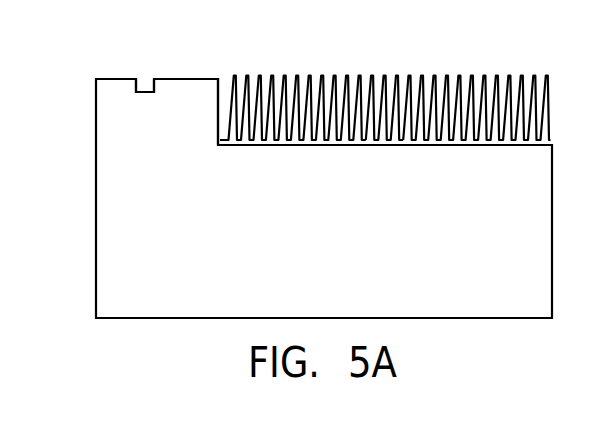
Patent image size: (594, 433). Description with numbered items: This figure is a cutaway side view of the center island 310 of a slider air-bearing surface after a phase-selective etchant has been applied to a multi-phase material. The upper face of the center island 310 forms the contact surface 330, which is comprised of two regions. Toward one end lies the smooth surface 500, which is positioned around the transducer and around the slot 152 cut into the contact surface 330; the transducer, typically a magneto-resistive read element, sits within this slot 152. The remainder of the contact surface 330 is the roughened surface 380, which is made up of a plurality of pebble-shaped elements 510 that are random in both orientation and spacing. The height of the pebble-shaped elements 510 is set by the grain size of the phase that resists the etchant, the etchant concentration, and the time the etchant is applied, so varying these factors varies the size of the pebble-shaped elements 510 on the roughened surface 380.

The center island 310 is at (96, 236).
The slot 152 is at (140, 90).
The smooth surface 500 is at (184, 78).
The contact surface 330 is at (248, 70).
The roughened surface 380 is at (384, 72).
The pebble-shaped elements 510 is at (424, 78).